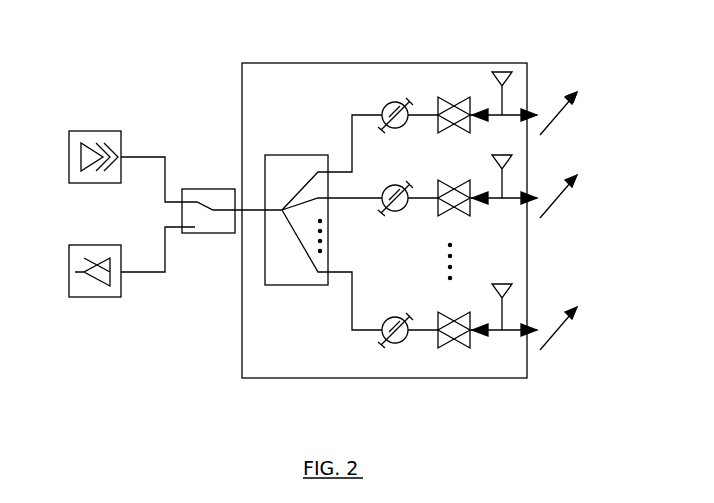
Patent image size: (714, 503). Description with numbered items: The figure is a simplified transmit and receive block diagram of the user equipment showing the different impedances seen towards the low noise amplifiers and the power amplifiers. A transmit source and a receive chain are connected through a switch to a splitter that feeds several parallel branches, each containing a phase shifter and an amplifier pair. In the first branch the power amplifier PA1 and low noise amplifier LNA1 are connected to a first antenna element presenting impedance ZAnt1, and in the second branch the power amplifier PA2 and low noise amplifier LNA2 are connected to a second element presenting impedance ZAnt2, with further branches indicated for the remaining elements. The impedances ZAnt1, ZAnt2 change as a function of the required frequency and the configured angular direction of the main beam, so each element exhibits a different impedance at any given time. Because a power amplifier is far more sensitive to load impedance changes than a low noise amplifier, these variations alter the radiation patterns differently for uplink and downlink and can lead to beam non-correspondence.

The power amplifier PA1 is at (454, 106).
The low noise amplifier LNA1 is at (454, 127).
The power amplifier PA2 is at (454, 189).
The low noise amplifier LNA2 is at (454, 209).
The antenna element impedance ZAnt1 is at (560, 113).
The antenna element impedance ZAnt2 is at (560, 196).